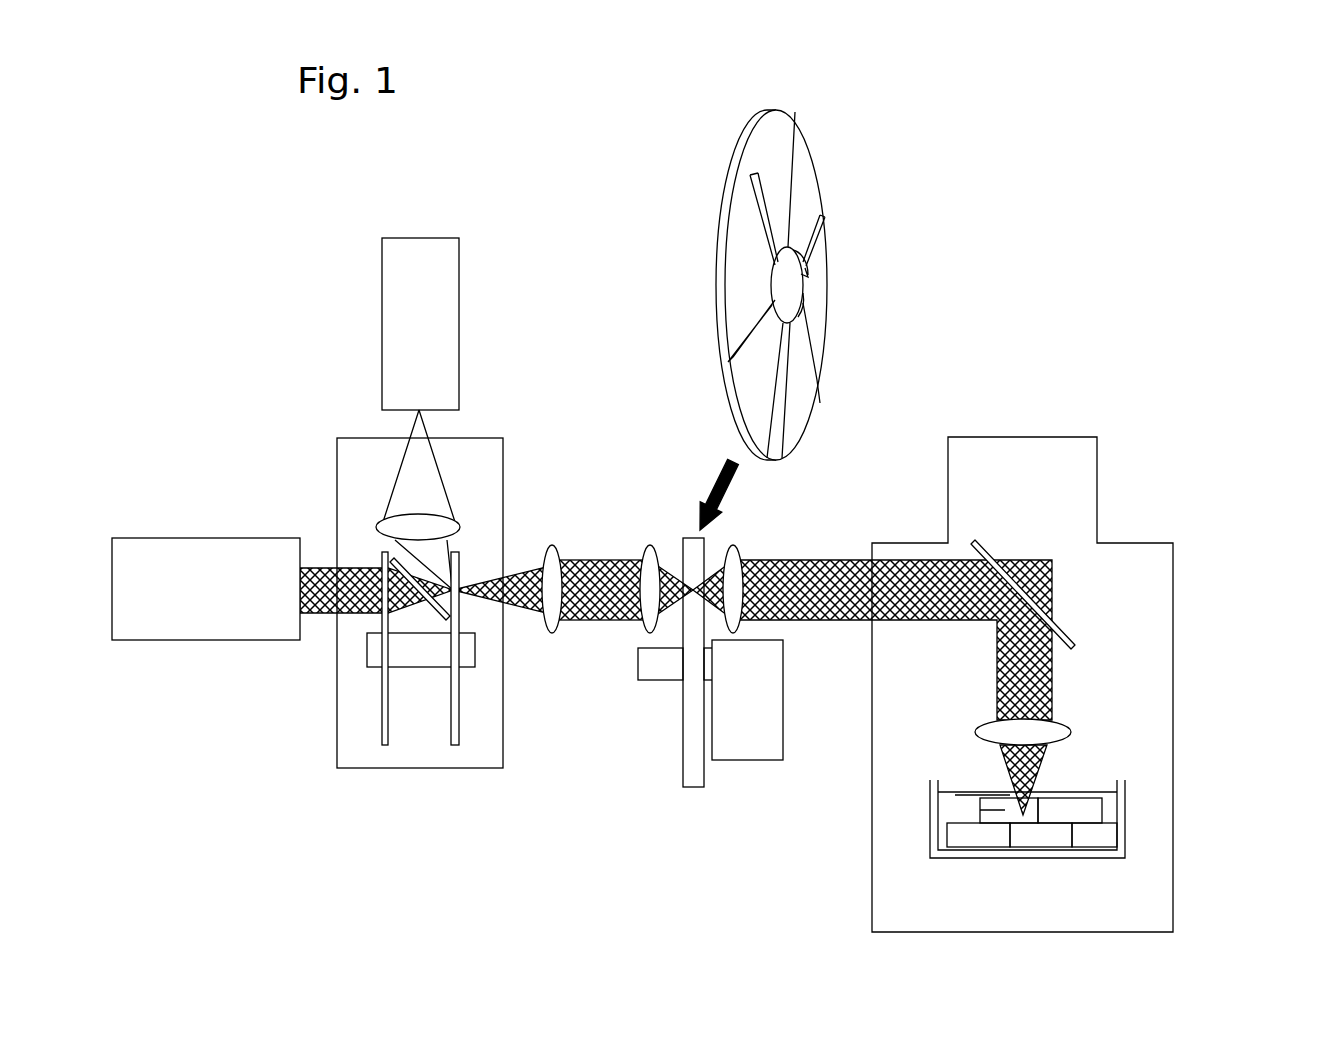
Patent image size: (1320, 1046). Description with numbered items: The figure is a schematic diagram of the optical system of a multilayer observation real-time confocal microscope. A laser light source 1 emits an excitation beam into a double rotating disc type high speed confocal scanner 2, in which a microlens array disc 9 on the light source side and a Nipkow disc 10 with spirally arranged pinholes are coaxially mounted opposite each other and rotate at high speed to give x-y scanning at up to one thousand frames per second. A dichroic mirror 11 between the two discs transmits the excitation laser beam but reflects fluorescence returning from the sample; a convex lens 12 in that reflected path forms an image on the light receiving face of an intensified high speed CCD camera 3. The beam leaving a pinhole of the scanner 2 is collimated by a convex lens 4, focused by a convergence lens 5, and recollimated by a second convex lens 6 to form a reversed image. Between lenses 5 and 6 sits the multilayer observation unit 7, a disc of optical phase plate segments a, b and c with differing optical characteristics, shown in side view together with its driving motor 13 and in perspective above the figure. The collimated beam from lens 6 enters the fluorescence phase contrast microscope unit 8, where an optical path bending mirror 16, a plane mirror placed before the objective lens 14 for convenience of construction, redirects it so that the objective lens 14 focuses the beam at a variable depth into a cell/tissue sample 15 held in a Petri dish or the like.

The laser light source 1 is at (177, 640).
The double rotating disc type high speed confocal scanner 2 is at (337, 460).
The intensified high speed CCD camera 3 is at (462, 297).
The convex lens 4 is at (558, 546).
The convergence lens 5 is at (657, 546).
The second convex lens 6 is at (738, 546).
The multilayer observation unit 7 is at (728, 208).
The fluorescence phase contrast microscope unit 8 is at (1177, 607).
The microlens array disc 9 is at (383, 727).
The Nipkow disc 10 is at (460, 727).
The dichroic mirror 11 is at (430, 617).
The convex lens 12 is at (387, 560).
The driving motor 13 is at (730, 730).
The objective lens 14 is at (1070, 733).
The cell/tissue sample 15 is at (955, 790).
The optical path bending mirror 16 is at (983, 545).
The phase plate segment a is at (803, 187).
The phase plate segment b is at (818, 292).
The phase plate segment c is at (800, 410).